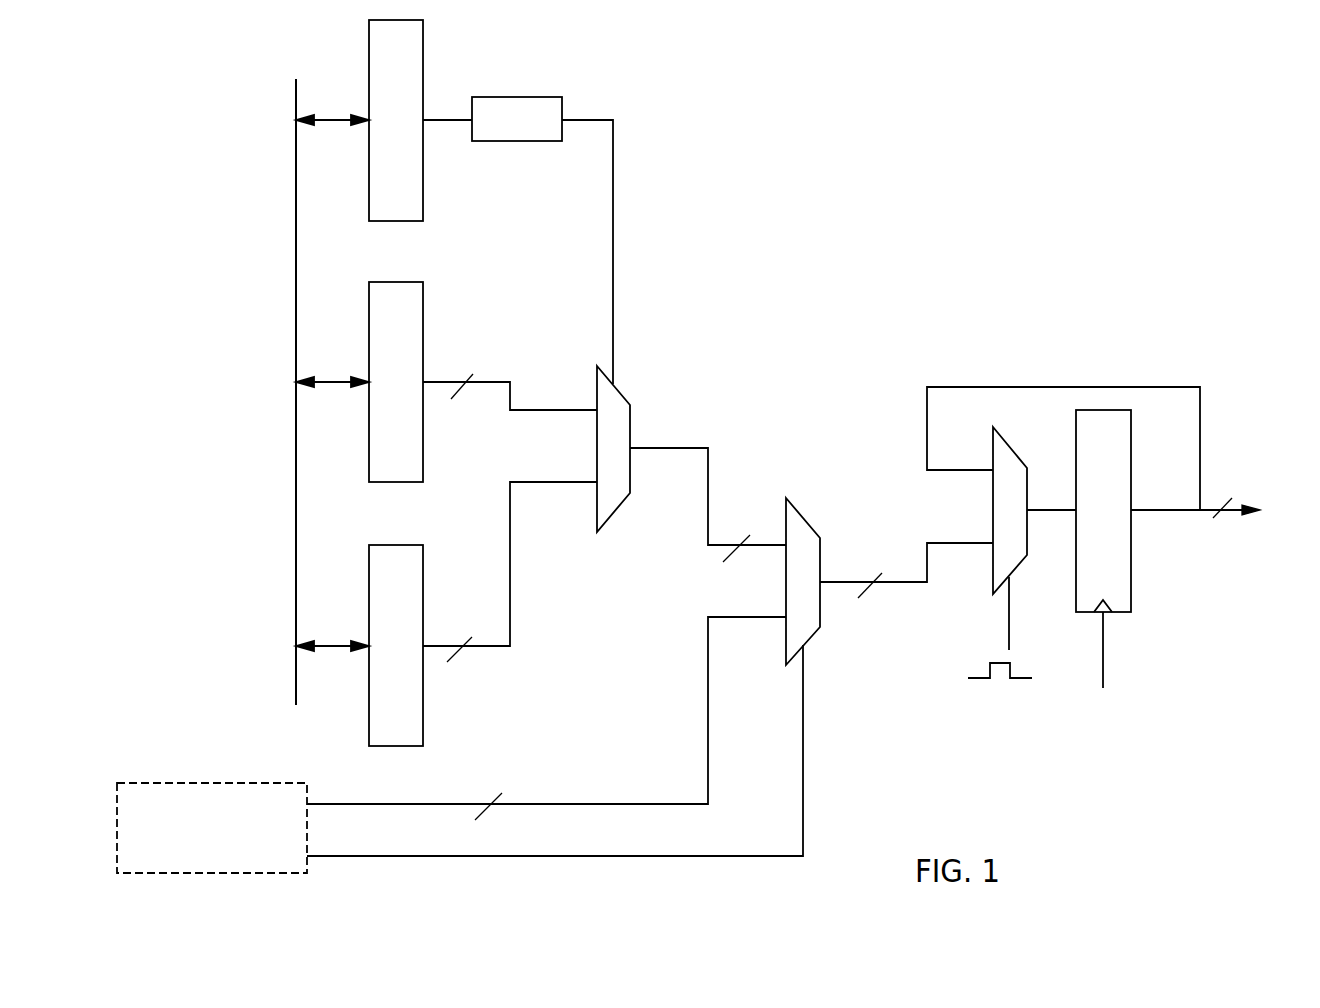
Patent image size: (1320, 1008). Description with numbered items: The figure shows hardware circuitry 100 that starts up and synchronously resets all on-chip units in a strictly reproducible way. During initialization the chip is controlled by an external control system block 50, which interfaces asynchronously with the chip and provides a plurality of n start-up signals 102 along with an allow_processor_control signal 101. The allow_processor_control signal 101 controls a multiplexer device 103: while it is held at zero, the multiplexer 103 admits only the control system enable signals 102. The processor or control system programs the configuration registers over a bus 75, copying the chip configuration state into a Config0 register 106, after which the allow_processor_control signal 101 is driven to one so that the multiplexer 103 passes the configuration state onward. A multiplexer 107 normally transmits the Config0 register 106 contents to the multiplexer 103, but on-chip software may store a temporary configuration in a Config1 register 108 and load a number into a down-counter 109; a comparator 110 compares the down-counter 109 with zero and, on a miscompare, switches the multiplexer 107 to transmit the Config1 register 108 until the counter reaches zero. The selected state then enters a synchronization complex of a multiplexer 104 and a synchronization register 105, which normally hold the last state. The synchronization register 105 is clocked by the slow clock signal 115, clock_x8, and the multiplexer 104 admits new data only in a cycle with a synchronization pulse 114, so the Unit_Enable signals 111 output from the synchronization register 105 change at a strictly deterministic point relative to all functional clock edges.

The control system block 50 is at (247, 783).
The bus 75 is at (296, 476).
The hardware circuitry 100 is at (796, 365).
The allow_processor_control signal 101 is at (346, 857).
The start-up signals 102 is at (357, 803).
The multiplexer device 103 is at (797, 507).
The multiplexer 104 is at (1003, 437).
The synchronization register 105 is at (1131, 430).
The Config0 register 106 is at (423, 308).
The multiplexer 107 is at (621, 391).
The Config1 register 108 is at (423, 564).
The down-counter 109 is at (423, 41).
The comparator 110 is at (540, 97).
The Unit_Enable signals 111 is at (1168, 512).
The synchronization pulse 114 is at (1009, 624).
The clock signal 115 is at (1103, 649).